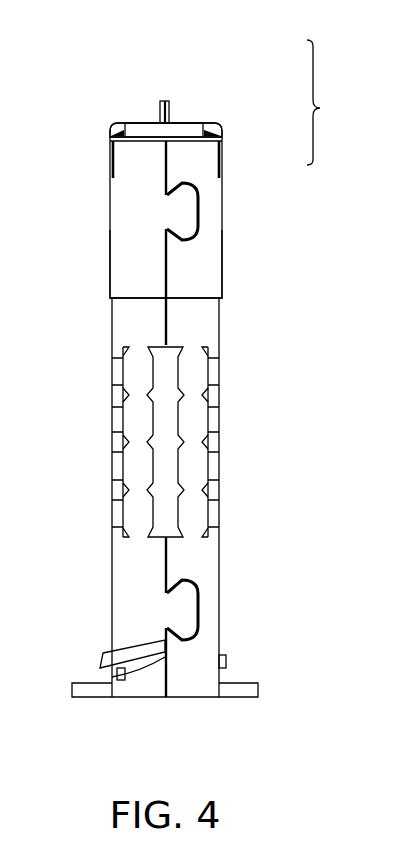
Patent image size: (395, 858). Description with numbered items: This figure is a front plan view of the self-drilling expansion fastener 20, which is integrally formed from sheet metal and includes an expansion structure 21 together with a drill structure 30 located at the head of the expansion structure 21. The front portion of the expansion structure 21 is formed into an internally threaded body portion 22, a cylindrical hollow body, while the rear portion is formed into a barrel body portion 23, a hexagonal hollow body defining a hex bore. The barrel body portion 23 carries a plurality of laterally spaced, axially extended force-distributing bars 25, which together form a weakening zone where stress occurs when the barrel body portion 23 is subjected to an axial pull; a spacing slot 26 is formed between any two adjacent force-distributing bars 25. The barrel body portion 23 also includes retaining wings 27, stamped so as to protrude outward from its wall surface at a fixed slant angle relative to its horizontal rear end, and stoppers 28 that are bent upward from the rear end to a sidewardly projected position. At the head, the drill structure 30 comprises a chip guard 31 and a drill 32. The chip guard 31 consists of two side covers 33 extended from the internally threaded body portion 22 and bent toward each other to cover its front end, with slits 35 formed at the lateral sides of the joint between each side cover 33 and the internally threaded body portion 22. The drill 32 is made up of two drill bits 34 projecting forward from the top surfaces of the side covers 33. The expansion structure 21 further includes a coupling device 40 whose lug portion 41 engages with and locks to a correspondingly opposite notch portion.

The self-drilling expansion fastener 20 is at (329, 102).
The expansion structure 21 is at (239, 183).
The internally threaded body portion 22 is at (236, 275).
The barrel body portion 23 is at (233, 326).
The force-distributing bars 25 is at (137, 468).
The spacing slot 26 is at (165, 380).
The retaining wing 27 is at (108, 652).
The stopper 28 is at (93, 698).
The drill structure 30 is at (234, 69).
The chip guard 31 is at (99, 115).
The drill 32 is at (154, 91).
The side cover 33 is at (140, 122).
The drill bit 34 is at (169, 104).
The slit 35 is at (222, 143).
The coupling device 40 is at (213, 227).
The lug portion 41 is at (190, 205).